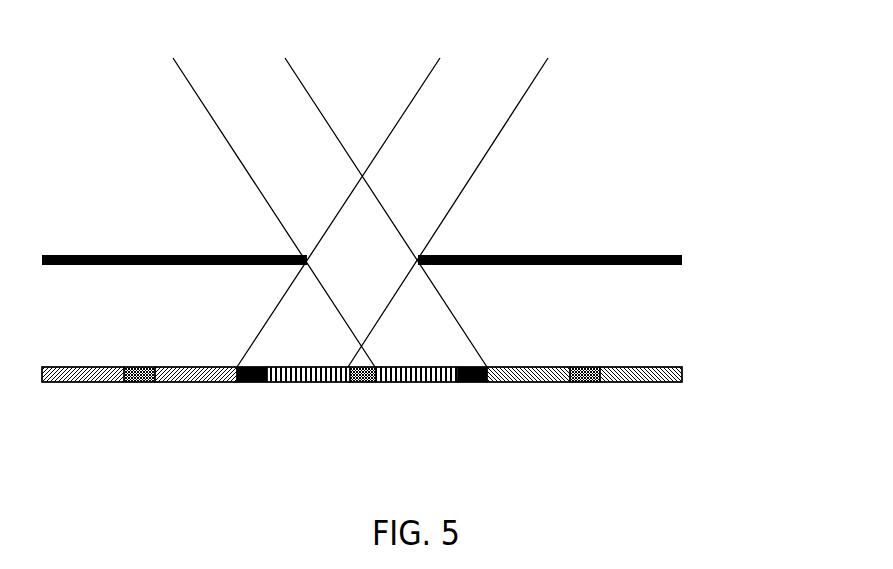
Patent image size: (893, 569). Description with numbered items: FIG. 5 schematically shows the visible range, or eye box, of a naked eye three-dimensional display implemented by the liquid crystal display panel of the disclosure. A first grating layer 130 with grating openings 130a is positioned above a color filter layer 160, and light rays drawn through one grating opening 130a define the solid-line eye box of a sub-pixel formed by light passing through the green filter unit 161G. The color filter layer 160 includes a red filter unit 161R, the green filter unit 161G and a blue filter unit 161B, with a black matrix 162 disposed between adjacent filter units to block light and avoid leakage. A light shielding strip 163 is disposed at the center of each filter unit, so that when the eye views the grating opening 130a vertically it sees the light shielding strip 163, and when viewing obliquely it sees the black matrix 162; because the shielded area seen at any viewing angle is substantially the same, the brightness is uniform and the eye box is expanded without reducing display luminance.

The first grating layer 130 is at (668, 255).
The grating opening 130a is at (372, 257).
The color filter layer 160 is at (408, 395).
The blue filter unit 161B is at (70, 382).
The green filter unit 161G is at (445, 382).
The red filter unit 161R is at (610, 382).
The black matrix 162 is at (250, 382).
The light shielding strip 163 is at (362, 382).